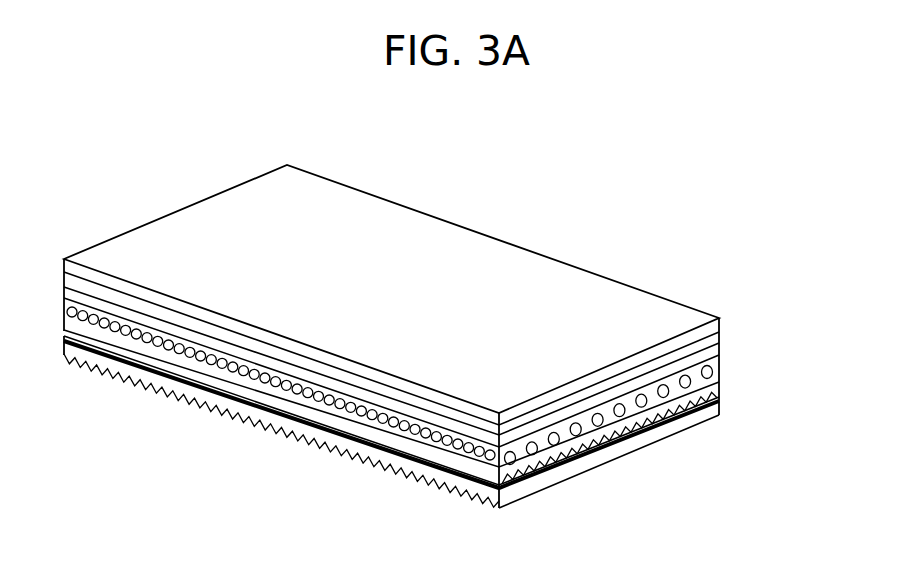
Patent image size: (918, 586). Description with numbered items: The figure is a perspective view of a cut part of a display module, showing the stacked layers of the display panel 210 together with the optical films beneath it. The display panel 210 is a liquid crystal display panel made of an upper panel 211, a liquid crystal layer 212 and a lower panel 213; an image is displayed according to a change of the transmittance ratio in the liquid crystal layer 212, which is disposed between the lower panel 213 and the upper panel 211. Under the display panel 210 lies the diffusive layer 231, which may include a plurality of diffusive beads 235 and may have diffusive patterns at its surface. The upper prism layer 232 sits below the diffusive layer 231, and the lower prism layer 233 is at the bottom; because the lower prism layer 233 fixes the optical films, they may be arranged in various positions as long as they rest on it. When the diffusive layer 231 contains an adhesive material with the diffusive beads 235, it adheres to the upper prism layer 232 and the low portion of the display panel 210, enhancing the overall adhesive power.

The display panel 210 is at (457, 316).
The upper panel 211 is at (720, 325).
The liquid crystal layer 212 is at (720, 337).
The lower panel 213 is at (720, 352).
The diffusive layer 231 is at (687, 388).
The upper prism layer 232 is at (651, 424).
The lower prism layer 233 is at (592, 459).
The diffusive beads 235 is at (516, 464).